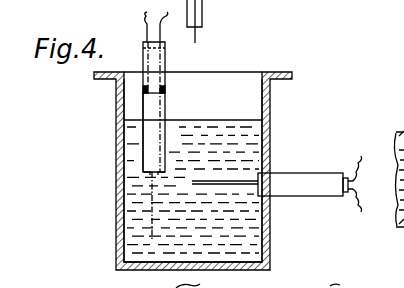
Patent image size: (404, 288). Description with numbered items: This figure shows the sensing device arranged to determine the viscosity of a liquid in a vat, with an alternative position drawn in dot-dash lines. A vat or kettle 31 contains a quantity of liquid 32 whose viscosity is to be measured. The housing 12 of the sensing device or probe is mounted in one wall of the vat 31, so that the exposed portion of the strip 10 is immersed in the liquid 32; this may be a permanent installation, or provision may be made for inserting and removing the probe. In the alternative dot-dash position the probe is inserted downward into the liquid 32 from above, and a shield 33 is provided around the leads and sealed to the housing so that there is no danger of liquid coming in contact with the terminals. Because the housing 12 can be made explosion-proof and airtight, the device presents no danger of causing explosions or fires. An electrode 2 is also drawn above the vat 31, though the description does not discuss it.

The electrode 2 is at (214, 41).
The conducting rod 10 is at (225, 184).
The heating unit 12 is at (318, 177).
The tank 31 is at (270, 103).
The liquid bath 32 is at (240, 131).
The tube 33 is at (166, 58).